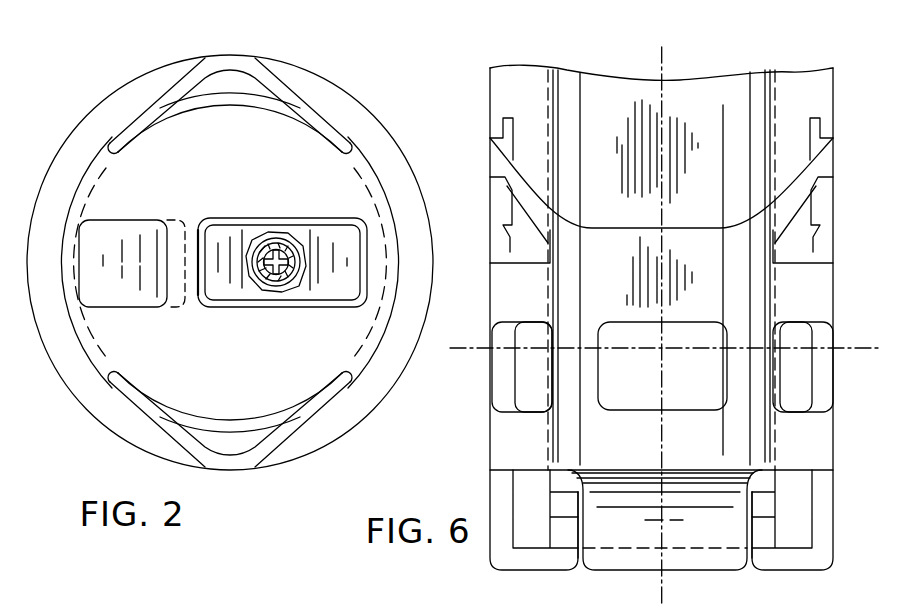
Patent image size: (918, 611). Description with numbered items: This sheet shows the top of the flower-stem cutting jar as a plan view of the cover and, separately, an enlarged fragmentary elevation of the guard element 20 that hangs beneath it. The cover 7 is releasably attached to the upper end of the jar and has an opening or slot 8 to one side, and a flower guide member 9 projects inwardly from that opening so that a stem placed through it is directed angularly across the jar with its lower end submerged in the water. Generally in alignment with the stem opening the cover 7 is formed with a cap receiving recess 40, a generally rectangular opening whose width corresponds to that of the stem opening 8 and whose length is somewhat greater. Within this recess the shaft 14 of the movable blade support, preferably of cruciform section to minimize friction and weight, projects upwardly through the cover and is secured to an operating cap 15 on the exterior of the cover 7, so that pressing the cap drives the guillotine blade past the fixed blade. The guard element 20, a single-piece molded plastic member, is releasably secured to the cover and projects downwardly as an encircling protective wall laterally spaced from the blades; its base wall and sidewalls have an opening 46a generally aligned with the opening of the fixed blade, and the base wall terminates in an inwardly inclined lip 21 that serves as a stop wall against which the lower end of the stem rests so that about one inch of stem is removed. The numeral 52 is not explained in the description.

In FIG. 2, the cover 7 is at (361, 107).
In FIG. 6, the cover 7 is at (462, 348).
In FIG. 2, the opening or slot 8 is at (231, 78).
In FIG. 6, the opening or slot 8 is at (662, 55).
In FIG. 2, the flower guide member 9 is at (120, 297).
In FIG. 2, the shaft 14 is at (292, 272).
In FIG. 2, the operating cap 15 is at (290, 228).
In FIG. 2, the cap receiving recess 40 is at (303, 300).
In FIG. 6, the guard element 20 is at (511, 452).
In FIG. 6, the lip 21 is at (645, 562).
In FIG. 6, the opening 46a is at (795, 326).
In FIG. 6, the feet 52 is at (565, 535).